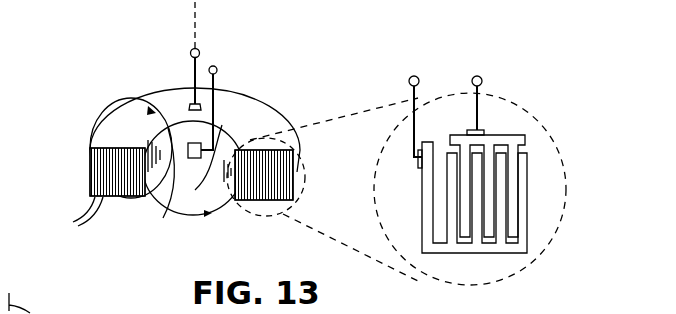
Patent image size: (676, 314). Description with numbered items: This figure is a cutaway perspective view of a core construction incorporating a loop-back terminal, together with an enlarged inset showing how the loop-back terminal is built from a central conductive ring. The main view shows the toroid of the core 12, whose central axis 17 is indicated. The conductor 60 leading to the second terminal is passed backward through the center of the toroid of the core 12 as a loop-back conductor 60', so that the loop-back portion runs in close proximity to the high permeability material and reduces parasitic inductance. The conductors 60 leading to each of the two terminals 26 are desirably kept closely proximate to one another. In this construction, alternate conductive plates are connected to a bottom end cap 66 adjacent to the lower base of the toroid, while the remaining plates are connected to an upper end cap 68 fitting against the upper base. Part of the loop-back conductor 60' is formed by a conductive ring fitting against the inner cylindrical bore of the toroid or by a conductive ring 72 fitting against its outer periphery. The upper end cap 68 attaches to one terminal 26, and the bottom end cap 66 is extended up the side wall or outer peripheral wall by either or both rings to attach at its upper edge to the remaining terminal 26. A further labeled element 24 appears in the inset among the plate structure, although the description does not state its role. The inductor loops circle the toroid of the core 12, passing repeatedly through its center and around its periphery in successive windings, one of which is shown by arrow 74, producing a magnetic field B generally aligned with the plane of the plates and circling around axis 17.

The core 12 is at (93, 65).
The axis 17 is at (211, 25).
The interdigitated electrode fingers 24 is at (510, 198).
The terminals 26 is at (190, 55).
The conductor 60 is at (195, 128).
The loop-back conductor 60' is at (193, 180).
The bottom end cap 66 is at (478, 268).
The upper end cap 68 is at (513, 137).
The conductive ring 72 is at (527, 203).
The arrow 74 is at (108, 105).